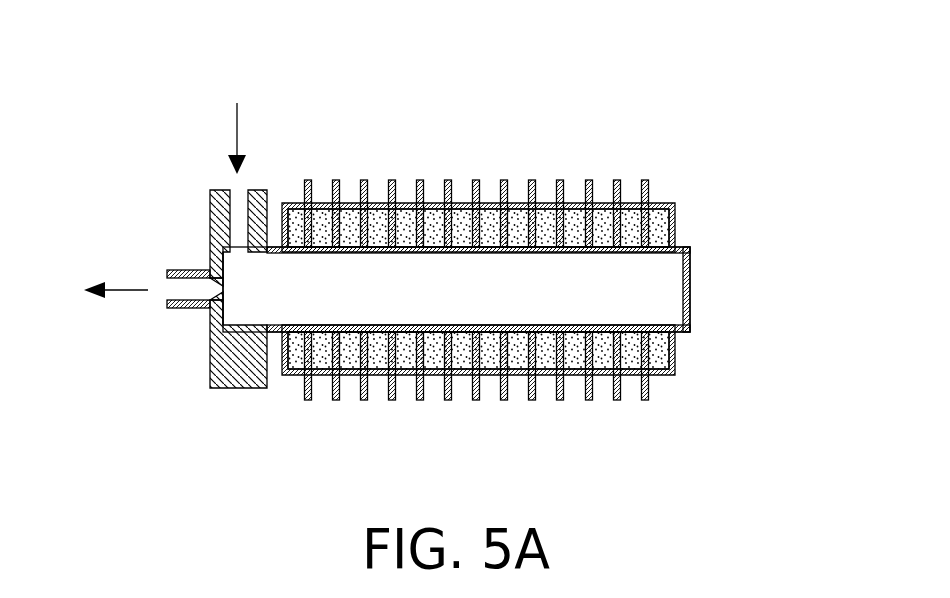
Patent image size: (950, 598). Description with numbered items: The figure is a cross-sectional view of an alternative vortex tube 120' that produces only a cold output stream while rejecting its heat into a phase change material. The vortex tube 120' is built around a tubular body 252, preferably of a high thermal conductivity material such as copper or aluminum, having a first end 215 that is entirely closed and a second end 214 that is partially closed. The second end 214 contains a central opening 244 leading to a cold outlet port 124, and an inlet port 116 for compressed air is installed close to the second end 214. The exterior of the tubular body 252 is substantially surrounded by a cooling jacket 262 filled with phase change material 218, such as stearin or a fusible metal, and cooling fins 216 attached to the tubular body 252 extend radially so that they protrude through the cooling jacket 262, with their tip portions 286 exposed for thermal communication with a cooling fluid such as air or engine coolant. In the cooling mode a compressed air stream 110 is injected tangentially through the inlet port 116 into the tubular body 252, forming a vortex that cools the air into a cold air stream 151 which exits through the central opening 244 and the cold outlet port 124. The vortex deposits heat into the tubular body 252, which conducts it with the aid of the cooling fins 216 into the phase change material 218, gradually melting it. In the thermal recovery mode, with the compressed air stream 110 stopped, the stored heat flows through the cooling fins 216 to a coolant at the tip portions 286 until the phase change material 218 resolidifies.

The vortex tube 120' is at (461, 177).
The compressed air stream 110 is at (236, 146).
The inlet port 116 is at (240, 188).
The cold air stream 151 is at (127, 288).
The cold outlet port 124 is at (165, 295).
The central opening 244 is at (210, 298).
The second end 214 is at (238, 288).
The phase change material 218 is at (460, 203).
The cooling jacket 262 is at (658, 203).
The tubular body 252 is at (607, 253).
The first end 215 is at (662, 302).
The cooling fins 216 is at (677, 353).
The tip portions 286 is at (650, 391).